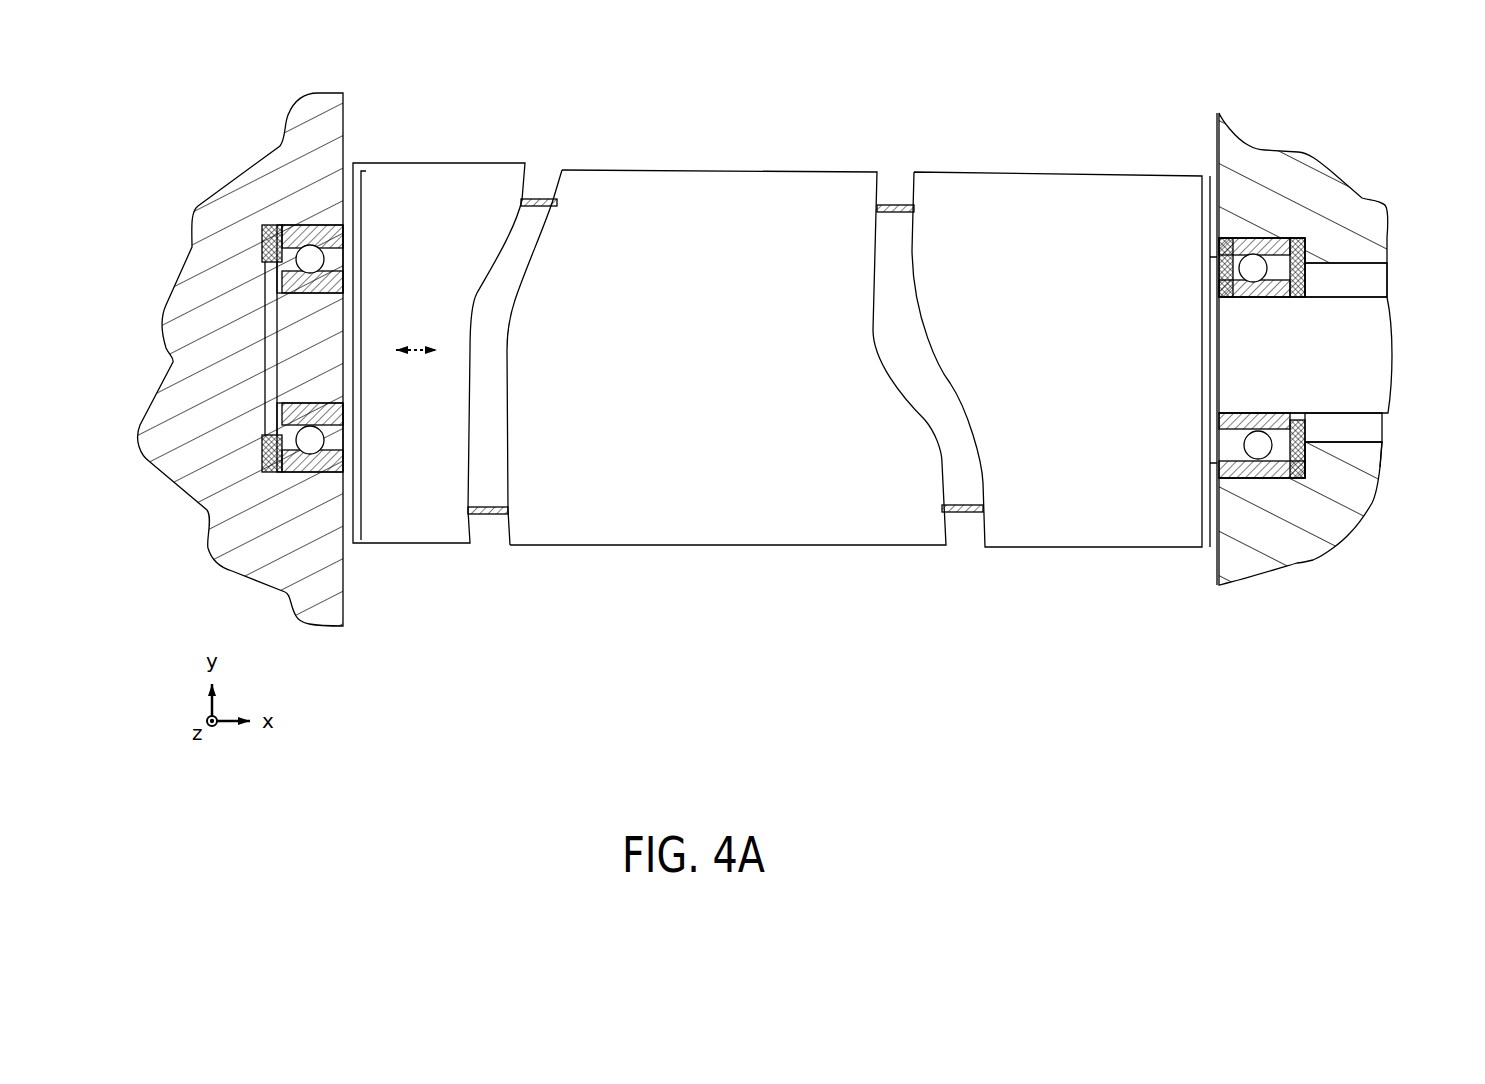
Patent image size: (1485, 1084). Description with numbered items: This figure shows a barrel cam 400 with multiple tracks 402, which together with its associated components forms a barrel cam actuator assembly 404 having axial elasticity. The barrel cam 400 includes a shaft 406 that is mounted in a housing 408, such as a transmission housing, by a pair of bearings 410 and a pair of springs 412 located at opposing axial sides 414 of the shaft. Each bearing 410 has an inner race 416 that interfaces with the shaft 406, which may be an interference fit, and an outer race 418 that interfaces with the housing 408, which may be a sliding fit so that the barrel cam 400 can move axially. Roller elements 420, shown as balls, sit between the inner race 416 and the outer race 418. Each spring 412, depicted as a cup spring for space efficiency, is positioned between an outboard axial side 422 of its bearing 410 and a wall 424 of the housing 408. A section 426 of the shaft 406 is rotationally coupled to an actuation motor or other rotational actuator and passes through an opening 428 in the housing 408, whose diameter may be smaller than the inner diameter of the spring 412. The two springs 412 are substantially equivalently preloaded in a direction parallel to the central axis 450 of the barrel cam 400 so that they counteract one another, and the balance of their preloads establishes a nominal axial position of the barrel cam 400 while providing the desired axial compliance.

The barrel cam 400 is at (785, 319).
The tracks 402 is at (540, 182).
The barrel cam actuator assembly 404 is at (825, 38).
The shaft 406 is at (1352, 357).
The housing 408 is at (1228, 563).
The bearings 410 is at (1255, 233).
The springs 412 is at (1295, 236).
The opposing axial sides 414 is at (262, 278).
The inner race 416 is at (1240, 420).
The outer race 418 is at (1238, 470).
The roller elements 420 is at (1262, 437).
The outboard axial side 422 is at (1307, 422).
The wall 424 is at (1306, 470).
The section of the shaft 426 is at (1362, 322).
The opening 428 is at (1386, 436).
The central axis 450 is at (418, 356).